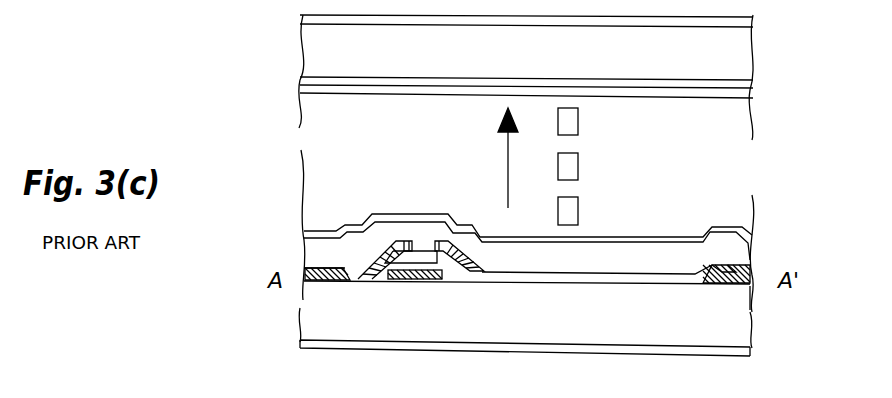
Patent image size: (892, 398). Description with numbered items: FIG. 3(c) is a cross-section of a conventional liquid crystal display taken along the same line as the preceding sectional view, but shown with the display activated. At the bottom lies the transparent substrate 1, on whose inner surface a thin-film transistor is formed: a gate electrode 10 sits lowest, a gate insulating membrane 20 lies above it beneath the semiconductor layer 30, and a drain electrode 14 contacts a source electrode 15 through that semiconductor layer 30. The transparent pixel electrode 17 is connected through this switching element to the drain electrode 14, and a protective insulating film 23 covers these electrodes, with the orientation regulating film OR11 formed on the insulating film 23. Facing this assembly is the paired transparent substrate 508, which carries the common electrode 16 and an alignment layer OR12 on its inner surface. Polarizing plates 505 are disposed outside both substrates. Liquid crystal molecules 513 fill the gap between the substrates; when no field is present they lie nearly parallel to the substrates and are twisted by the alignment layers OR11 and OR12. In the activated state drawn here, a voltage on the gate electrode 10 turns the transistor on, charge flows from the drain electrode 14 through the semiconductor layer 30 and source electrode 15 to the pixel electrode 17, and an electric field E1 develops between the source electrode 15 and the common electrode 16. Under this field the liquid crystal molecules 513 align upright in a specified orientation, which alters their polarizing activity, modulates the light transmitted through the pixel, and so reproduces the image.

The polarizing plate 505 is at (753, 17).
The paired transparent substrate 508 is at (740, 62).
The common electrode 16 is at (757, 83).
The alignment layer OR12 is at (756, 98).
The orientation regulating film OR11 is at (757, 224).
The protective insulating film 23 is at (738, 250).
The pixel electrode 17 is at (560, 285).
The gate insulating membrane 20 is at (357, 283).
The gate electrode 10 is at (426, 284).
The semiconductor layer 30 is at (415, 252).
The drain electrode 14 is at (357, 265).
The source electrode 15 is at (452, 240).
The transparent substrate 1 is at (754, 322).
The liquid crystal molecules 513 is at (570, 123).
The electric field E1 is at (495, 158).